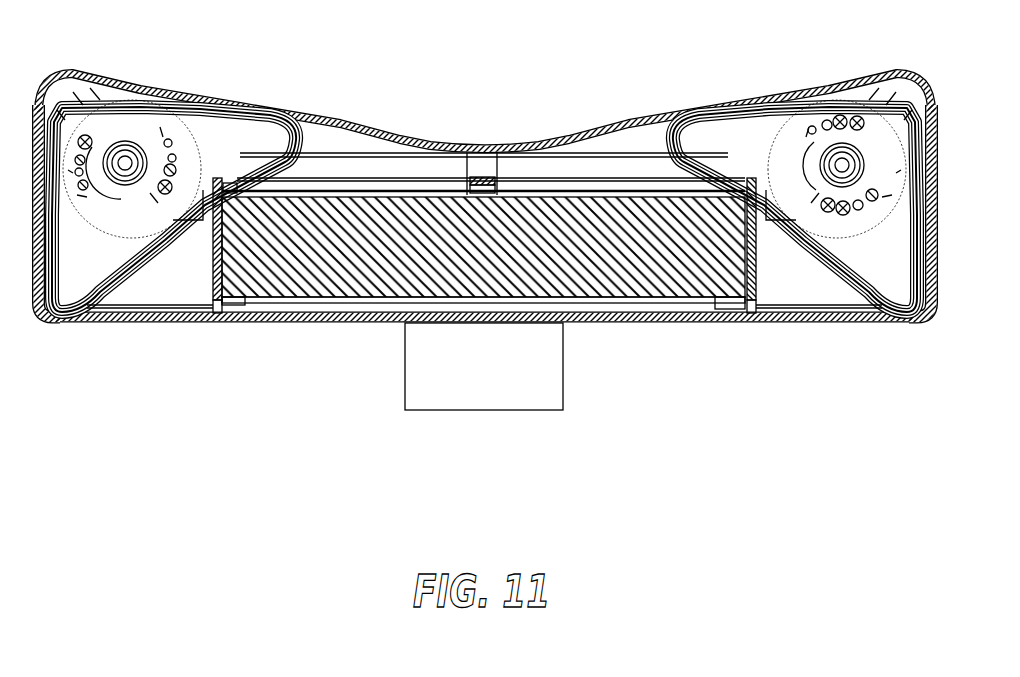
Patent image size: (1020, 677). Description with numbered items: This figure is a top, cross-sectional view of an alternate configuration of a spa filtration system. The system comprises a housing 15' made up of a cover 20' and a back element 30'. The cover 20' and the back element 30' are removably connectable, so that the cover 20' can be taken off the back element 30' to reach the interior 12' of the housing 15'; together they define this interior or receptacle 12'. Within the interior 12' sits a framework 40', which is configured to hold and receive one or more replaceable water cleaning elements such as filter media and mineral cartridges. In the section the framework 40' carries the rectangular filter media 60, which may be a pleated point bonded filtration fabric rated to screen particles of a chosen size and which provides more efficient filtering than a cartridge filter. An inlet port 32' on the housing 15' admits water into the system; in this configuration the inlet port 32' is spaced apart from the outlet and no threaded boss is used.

The interior 12' is at (483, 111).
The housing 15' is at (343, 91).
The cover 20' is at (164, 165).
The back element 30' is at (485, 239).
The inlet port 32' is at (440, 366).
The framework 40' is at (795, 237).
The rectangular filter media 60 is at (692, 275).